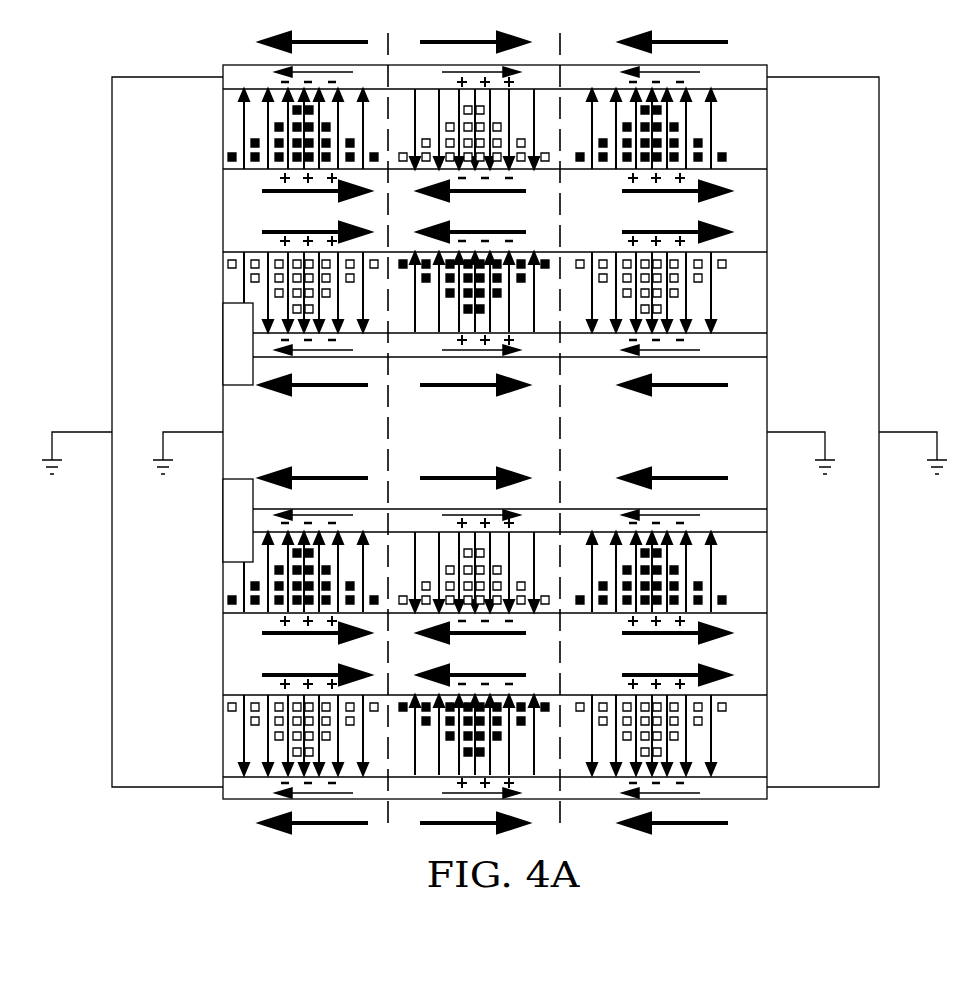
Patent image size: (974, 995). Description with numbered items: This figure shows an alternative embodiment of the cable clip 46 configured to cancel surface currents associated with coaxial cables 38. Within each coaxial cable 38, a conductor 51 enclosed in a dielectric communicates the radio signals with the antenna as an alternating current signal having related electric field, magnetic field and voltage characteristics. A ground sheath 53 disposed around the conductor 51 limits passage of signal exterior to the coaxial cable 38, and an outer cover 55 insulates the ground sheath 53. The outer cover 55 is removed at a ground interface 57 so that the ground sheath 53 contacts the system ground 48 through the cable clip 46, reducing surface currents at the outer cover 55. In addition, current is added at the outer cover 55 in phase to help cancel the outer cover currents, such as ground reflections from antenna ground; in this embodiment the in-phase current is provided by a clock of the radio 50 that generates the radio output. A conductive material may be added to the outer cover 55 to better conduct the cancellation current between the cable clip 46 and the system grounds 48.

The coaxial cable 38 is at (97, 275).
The cable clip 46 is at (223, 471).
The system ground 48 is at (82, 432).
The radio 50 is at (684, 387).
The conductor 51 is at (233, 210).
The ground sheath 53 is at (255, 130).
The outer cover 55 is at (758, 63).
The ground interface 57 is at (233, 326).